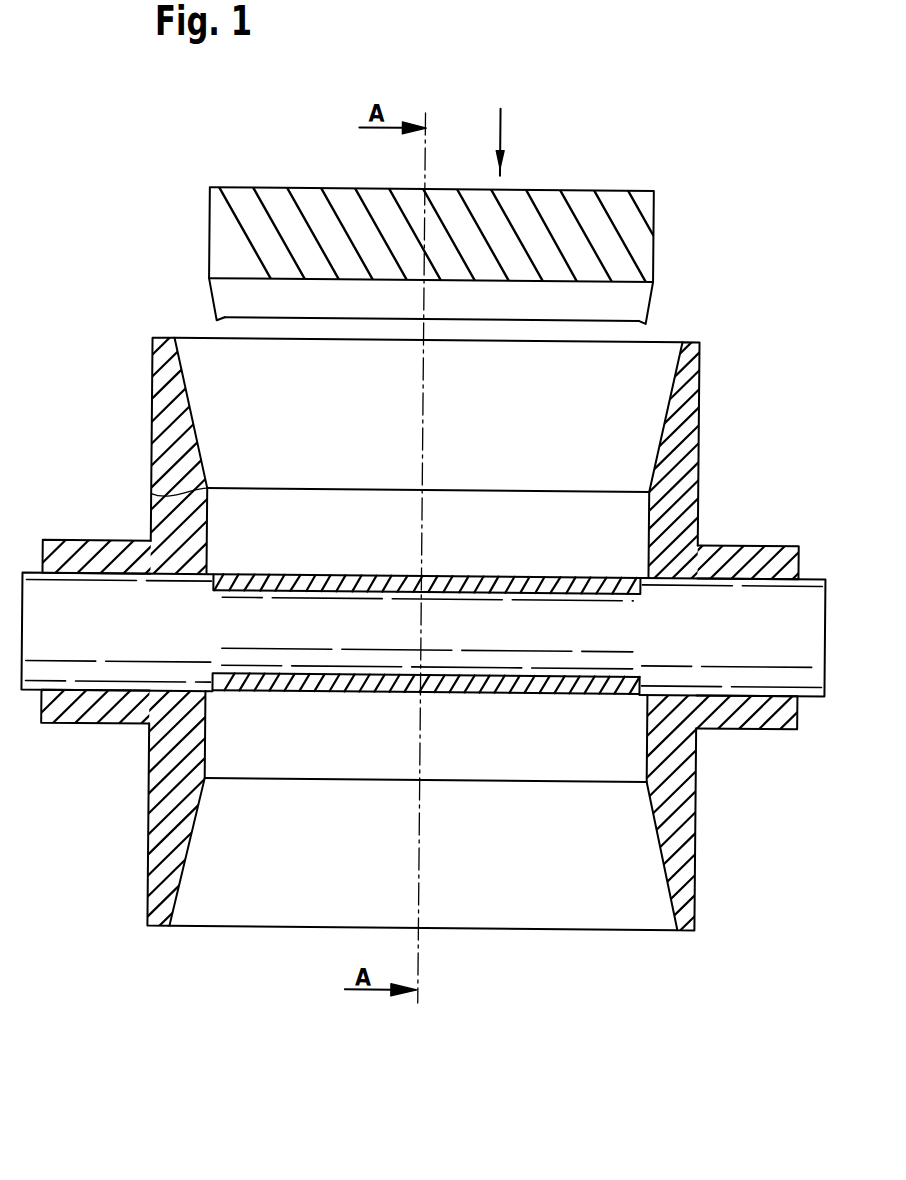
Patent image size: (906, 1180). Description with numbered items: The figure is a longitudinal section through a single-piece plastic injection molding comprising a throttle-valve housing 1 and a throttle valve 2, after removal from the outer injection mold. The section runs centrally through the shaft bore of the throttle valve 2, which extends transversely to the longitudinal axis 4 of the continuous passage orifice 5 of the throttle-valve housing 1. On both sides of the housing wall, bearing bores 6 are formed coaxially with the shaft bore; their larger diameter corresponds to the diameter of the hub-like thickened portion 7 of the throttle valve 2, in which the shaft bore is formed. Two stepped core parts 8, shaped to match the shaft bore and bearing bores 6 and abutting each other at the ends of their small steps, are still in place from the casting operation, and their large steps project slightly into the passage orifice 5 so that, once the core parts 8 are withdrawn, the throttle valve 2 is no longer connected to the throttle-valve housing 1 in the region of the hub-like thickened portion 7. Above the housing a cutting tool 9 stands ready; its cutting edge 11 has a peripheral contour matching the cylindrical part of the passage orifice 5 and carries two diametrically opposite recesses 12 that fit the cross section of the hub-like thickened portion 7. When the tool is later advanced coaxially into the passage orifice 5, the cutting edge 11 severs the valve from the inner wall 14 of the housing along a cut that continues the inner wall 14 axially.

The throttle-valve housing 1 is at (680, 415).
The throttle valve 2 is at (615, 576).
The longitudinal axis 4 is at (418, 938).
The passage orifice 5 is at (255, 895).
The bearing bores 6 is at (97, 705).
The hub-like thickened portion 7 is at (252, 575).
The core parts 8 is at (62, 645).
The cutting tool 9 is at (555, 210).
The cutting edge 11 is at (212, 322).
The recesses 12 is at (232, 298).
The inner wall 14 is at (150, 496).